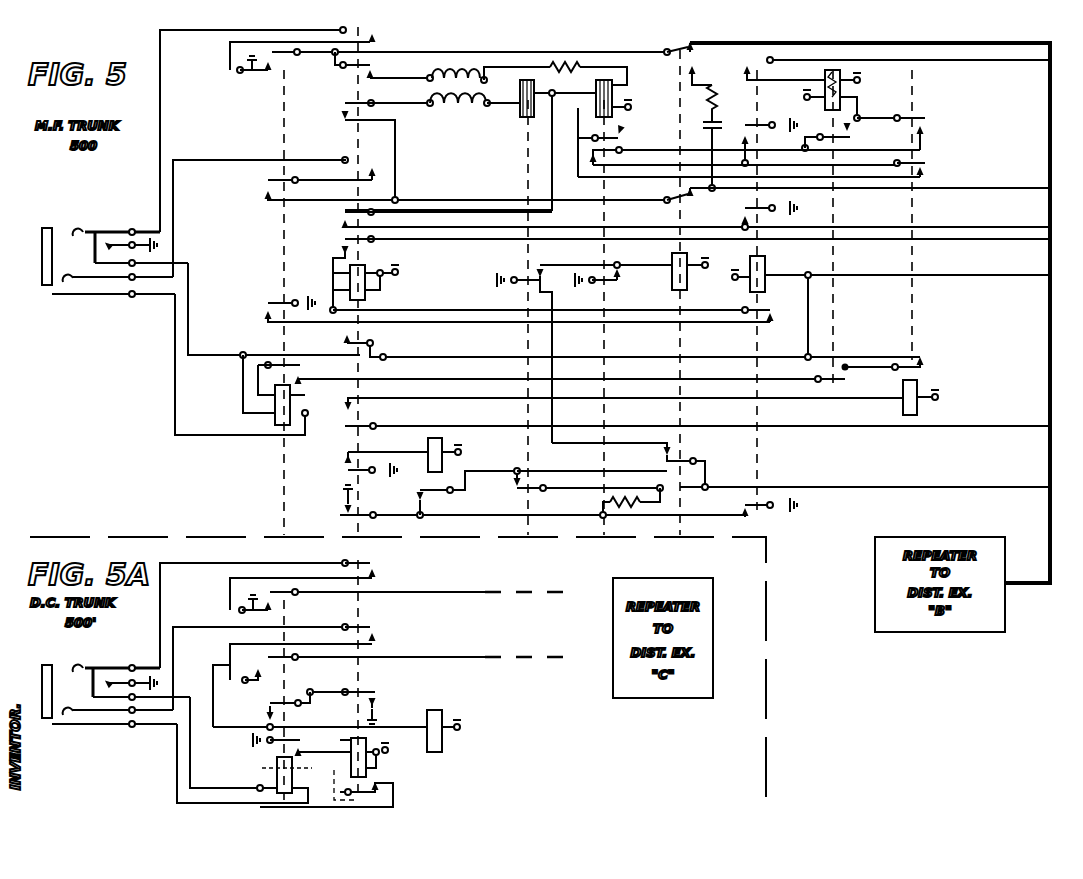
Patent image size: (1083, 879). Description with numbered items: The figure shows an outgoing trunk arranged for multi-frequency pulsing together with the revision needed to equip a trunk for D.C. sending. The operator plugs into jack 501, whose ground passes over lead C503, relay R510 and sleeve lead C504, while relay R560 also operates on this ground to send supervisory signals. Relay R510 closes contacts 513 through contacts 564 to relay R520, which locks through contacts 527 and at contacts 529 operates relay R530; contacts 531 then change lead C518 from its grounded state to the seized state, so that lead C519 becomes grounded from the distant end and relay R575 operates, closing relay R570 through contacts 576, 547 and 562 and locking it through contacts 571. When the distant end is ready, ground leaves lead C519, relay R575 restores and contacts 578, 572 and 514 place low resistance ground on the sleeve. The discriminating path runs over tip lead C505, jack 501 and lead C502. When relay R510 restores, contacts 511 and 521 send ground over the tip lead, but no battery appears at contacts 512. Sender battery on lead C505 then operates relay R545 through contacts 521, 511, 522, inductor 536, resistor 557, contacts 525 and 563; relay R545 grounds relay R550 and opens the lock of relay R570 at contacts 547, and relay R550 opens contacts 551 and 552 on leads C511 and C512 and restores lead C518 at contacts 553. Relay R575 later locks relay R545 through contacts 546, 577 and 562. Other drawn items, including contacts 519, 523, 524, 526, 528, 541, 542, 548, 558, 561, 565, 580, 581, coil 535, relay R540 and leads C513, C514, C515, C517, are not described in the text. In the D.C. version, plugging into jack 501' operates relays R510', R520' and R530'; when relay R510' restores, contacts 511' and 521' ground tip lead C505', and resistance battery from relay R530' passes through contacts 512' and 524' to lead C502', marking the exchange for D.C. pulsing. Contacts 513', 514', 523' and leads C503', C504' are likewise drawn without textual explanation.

In FIG. 5, the jack 501 is at (115, 251).
In FIG. 5, the trunk tip lead C505 is at (265, 129).
In FIG. 5, the lead C502 is at (259, 209).
In FIG. 5, the lead C503 is at (274, 310).
In FIG. 5, the sleeve lead C504 is at (241, 364).
In FIG. 5, the contacts 511 is at (452, 62).
In FIG. 5, the contacts 512 is at (444, 190).
In FIG. 5, the contacts 513 is at (495, 309).
In FIG. 5, the contacts 514 is at (551, 378).
In FIG. 5, the relay contact 519 is at (339, 510).
In FIG. 5, the contacts 521 is at (392, 37).
In FIG. 5, the contacts 522 is at (372, 80).
In FIG. 5, the relay contact 523 is at (365, 150).
In FIG. 5, the relay contact 524 is at (347, 169).
In FIG. 5, the contacts 525 is at (344, 220).
In FIG. 5, the relay contact 526 is at (344, 250).
In FIG. 5, the contacts 527 is at (344, 340).
In FIG. 5, the relay contact 528 is at (352, 413).
In FIG. 5, the contacts 529 is at (343, 463).
In FIG. 5, the contacts 531 is at (469, 493).
In FIG. 5, the inductance coil 535 is at (472, 112).
In FIG. 5, the inductor 536 is at (472, 69).
In FIG. 5, the relay contact 541 is at (530, 272).
In FIG. 5, the relay contact 542 is at (455, 488).
In FIG. 5, the contacts 546 is at (619, 136).
In FIG. 5, the contacts 547 is at (755, 155).
In FIG. 5, the relay contact 548 is at (620, 283).
In FIG. 5, the contacts 551 is at (678, 44).
In FIG. 5, the contacts 552 is at (678, 192).
In FIG. 5, the contacts 553 is at (660, 459).
In FIG. 5, the resistor 557 is at (582, 73).
In FIG. 5, the resistor 558 is at (609, 500).
In FIG. 5, the relay contact 561 is at (750, 59).
In FIG. 5, the contacts 562 is at (750, 132).
In FIG. 5, the contacts 563 is at (743, 213).
In FIG. 5, the contacts 564 is at (772, 310).
In FIG. 5, the relay contact 565 is at (742, 514).
In FIG. 5, the contacts 571 is at (847, 137).
In FIG. 5, the contacts 572 is at (845, 383).
In FIG. 5, the contacts 576 is at (922, 123).
In FIG. 5, the contacts 577 is at (925, 168).
In FIG. 5, the contacts 578 is at (922, 362).
In FIG. 5, the resistor 580 is at (715, 100).
In FIG. 5, the condenser 581 is at (698, 124).
In FIG. 5, the relay R510 is at (259, 396).
In FIG. 5, the relay R520 is at (379, 282).
In FIG. 5, the relay R530 is at (423, 452).
In FIG. 5, the relay R540 is at (527, 120).
In FIG. 5, the relay R545 is at (614, 90).
In FIG. 5, the relay R550 is at (688, 292).
In FIG. 5, the relay R560 is at (765, 255).
In FIG. 5, the relay R570 is at (855, 94).
In FIG. 5, the relay R575 is at (902, 411).
In FIG. 5, the lead C511 is at (1033, 39).
In FIG. 5, the lead C512 is at (1033, 187).
In FIG. 5, the conductor C513 is at (1033, 225).
In FIG. 5, the conductor C514 is at (1033, 254).
In FIG. 5, the conductor C515 is at (1033, 296).
In FIG. 5, the conductor C517 is at (1033, 58).
In FIG. 5, the lead C518 is at (1033, 486).
In FIG. 5, the lead C519 is at (1033, 425).
In FIG. 5A, the jack 501' is at (116, 684).
In FIG. 5A, the tip lead C505' is at (266, 614).
In FIG. 5A, the lead C502' is at (259, 658).
In FIG. 5A, the conductor C503' is at (149, 757).
In FIG. 5A, the conductor C504' is at (143, 780).
In FIG. 5A, the contacts 511' is at (362, 603).
In FIG. 5A, the contacts 512' is at (363, 668).
In FIG. 5A, the relay contact 513' is at (302, 744).
In FIG. 5A, the relay contact 514' is at (320, 697).
In FIG. 5A, the contacts 521' is at (383, 570).
In FIG. 5A, the relay contact 523' is at (365, 706).
In FIG. 5A, the contacts 524' is at (325, 652).
In FIG. 5A, the relay R510' is at (244, 750).
In FIG. 5A, the relay R520' is at (349, 772).
In FIG. 5A, the relay R530' is at (464, 725).